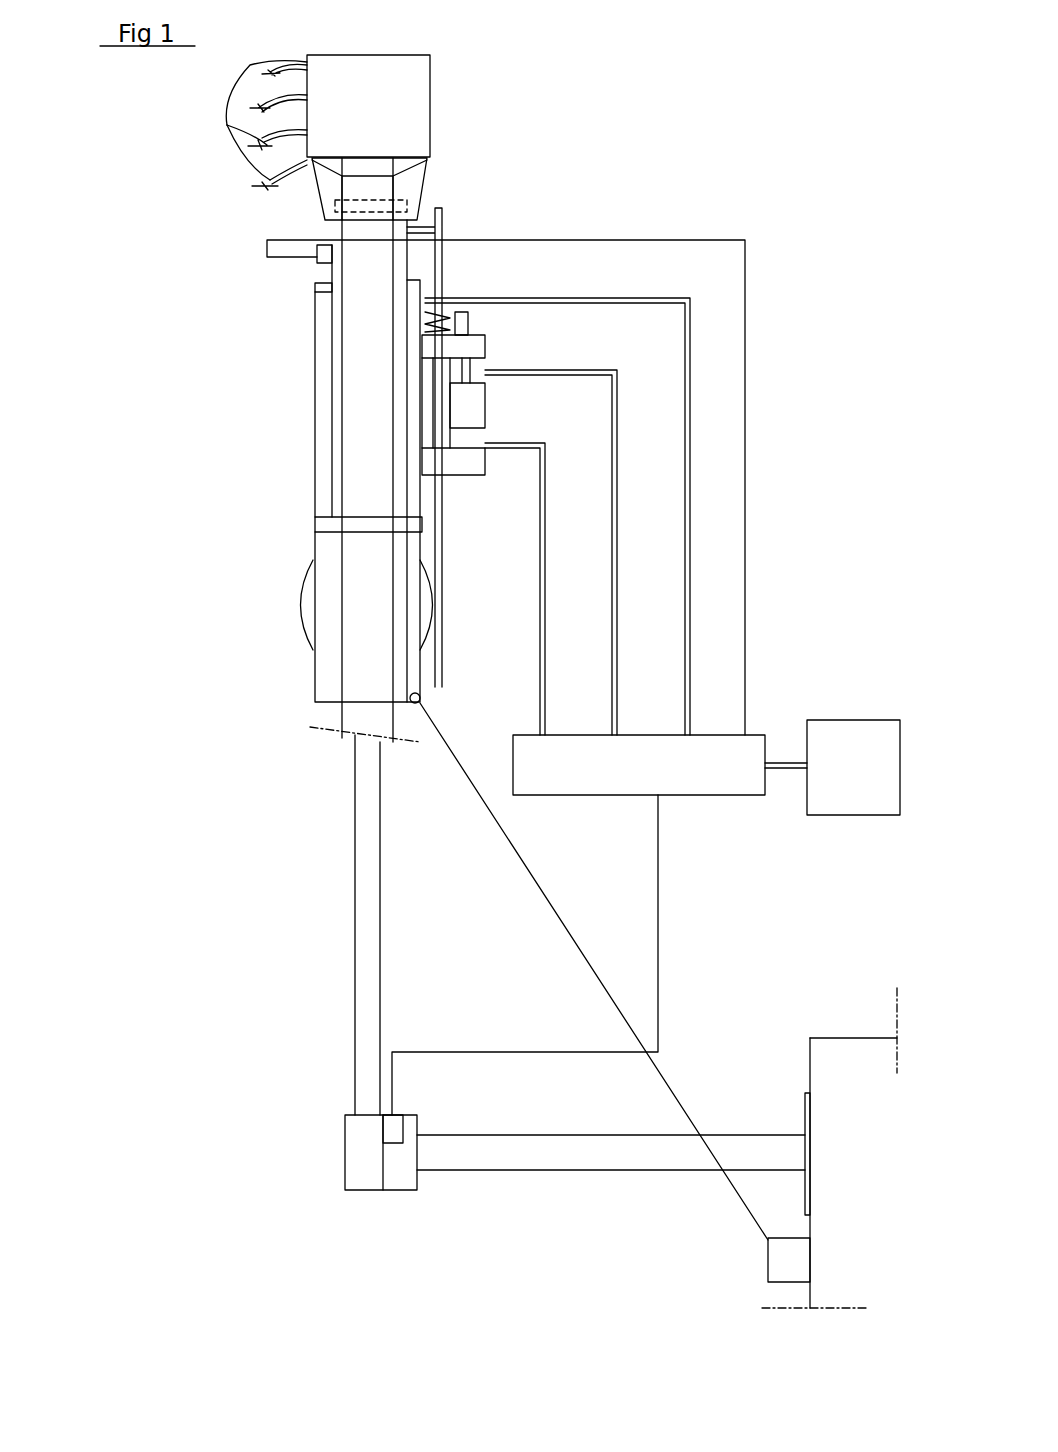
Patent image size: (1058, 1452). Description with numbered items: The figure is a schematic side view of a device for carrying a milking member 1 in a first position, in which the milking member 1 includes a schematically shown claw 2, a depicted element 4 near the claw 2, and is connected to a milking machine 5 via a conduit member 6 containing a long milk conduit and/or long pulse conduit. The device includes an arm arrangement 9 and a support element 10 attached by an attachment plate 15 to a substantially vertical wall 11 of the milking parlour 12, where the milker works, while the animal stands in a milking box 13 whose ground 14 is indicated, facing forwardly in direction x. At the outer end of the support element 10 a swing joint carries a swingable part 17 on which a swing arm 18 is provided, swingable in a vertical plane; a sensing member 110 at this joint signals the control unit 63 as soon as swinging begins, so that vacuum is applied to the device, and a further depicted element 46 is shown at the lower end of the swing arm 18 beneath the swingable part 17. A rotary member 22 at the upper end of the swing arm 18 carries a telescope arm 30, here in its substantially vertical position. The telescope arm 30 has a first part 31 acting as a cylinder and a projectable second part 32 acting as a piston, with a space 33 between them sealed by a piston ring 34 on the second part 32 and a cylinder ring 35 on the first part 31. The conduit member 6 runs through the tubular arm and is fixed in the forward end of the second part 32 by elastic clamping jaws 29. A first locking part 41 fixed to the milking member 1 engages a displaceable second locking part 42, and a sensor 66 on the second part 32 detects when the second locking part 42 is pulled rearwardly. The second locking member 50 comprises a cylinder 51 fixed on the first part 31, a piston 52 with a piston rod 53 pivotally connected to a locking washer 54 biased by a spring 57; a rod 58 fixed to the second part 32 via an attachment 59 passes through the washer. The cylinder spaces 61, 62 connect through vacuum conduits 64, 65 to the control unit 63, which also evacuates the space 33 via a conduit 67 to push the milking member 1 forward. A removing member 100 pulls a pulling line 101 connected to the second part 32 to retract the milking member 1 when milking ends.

The milking member 1 is at (370, 42).
The claw 2 is at (415, 103).
The hand 4 is at (256, 125).
The milking machine 5 is at (835, 732).
The conduit member 6 is at (340, 195).
The arm arrangement 9 is at (225, 630).
The support element 10 is at (530, 1160).
The vertical wall 11 is at (808, 1060).
The milking parlour 12 is at (638, 1225).
The milking box 13 is at (928, 970).
The ground 14 is at (826, 1038).
The attachment plate 15 is at (805, 1108).
The swingable part 17 is at (350, 1140).
The swing arm 18 is at (355, 890).
The rotary member 22 is at (300, 602).
The elastic clamping jaws 29 is at (333, 212).
The telescope arm 30 is at (275, 445).
The first part 31 is at (315, 490).
The second part 32 is at (330, 345).
The space 33 is at (318, 403).
The piston ring 34 is at (330, 522).
The cylinder ring 35 is at (315, 292).
The first locking part 41 is at (415, 163).
The second locking part 42 is at (425, 186).
The bearing 46 is at (388, 1192).
The second locking member 50 is at (500, 320).
The cylinder 51 is at (470, 476).
The piston 52 is at (475, 405).
The piston rod 53 is at (470, 375).
The locking washer 54 is at (462, 312).
The spring 57 is at (468, 333).
The rod 58 is at (443, 266).
The attachment 59 is at (443, 212).
The cylinder space 61 is at (470, 450).
The cylinder space 62 is at (478, 355).
The control unit 63 is at (585, 780).
The vacuum conduit 64 is at (540, 577).
The vacuum conduit 65 is at (614, 498).
The sensor 66 is at (320, 256).
The conduit 67 is at (686, 470).
The removing member 100 is at (782, 1255).
The pulling line 101 is at (553, 925).
The sensing member 110 is at (393, 1125).